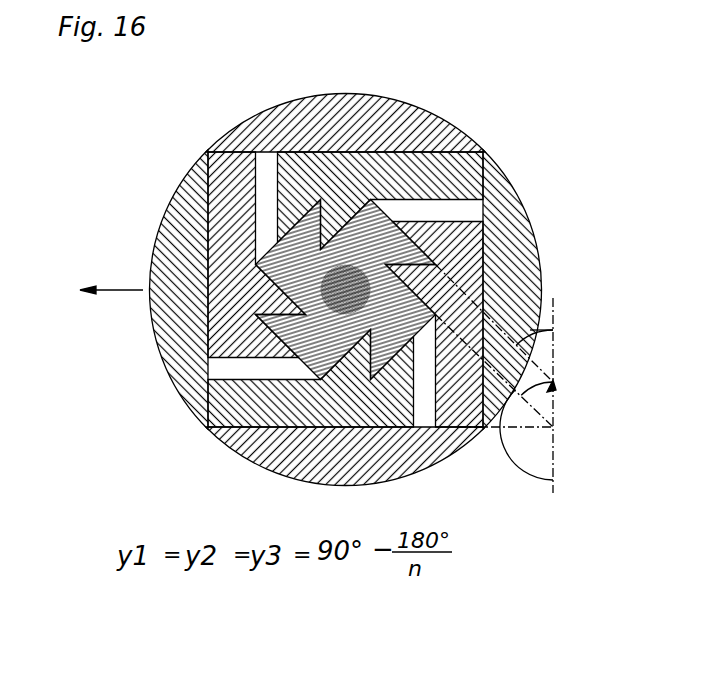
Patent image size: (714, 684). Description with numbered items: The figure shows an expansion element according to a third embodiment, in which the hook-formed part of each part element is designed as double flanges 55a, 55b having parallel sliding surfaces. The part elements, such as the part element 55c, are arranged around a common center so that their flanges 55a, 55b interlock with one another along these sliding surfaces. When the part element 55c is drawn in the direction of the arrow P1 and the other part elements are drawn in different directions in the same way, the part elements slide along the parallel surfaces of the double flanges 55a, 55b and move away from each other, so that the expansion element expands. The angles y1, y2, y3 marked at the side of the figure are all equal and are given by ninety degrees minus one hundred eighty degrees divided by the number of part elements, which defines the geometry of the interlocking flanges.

The double flange 55a is at (290, 190).
The double flange 55b is at (342, 217).
The part element 55c is at (185, 315).
The arrow P1 is at (111, 274).
The angle y1 is at (540, 349).
The angle y2 is at (540, 393).
The angle y3 is at (517, 413).